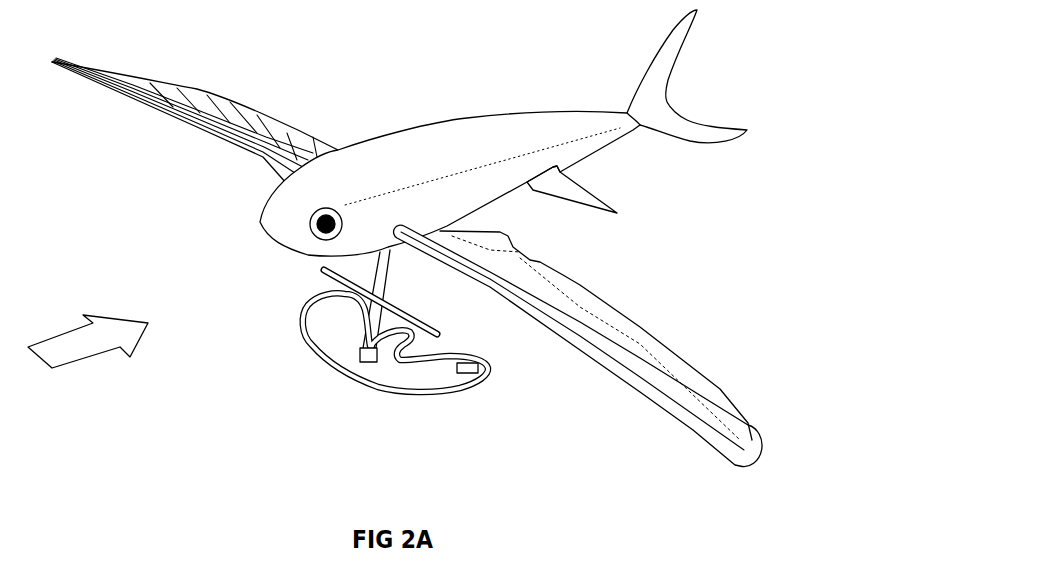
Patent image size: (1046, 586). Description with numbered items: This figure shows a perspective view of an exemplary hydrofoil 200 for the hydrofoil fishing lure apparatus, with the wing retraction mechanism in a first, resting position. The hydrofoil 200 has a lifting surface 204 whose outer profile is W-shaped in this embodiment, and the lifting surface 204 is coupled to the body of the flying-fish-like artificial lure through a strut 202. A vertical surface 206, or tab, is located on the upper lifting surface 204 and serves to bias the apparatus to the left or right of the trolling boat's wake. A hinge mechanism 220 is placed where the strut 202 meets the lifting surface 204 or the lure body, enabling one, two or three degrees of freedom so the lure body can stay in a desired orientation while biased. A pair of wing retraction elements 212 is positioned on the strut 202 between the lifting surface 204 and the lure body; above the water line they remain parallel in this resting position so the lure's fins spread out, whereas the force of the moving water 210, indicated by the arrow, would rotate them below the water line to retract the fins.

The hydrofoil 200 is at (254, 296).
The strut 202 is at (372, 316).
The lifting surface 204 is at (455, 377).
The vertical surface 206 is at (478, 369).
The moving water 210 is at (82, 345).
The wing retraction element 212 is at (425, 322).
The hinge mechanism 220 is at (360, 356).